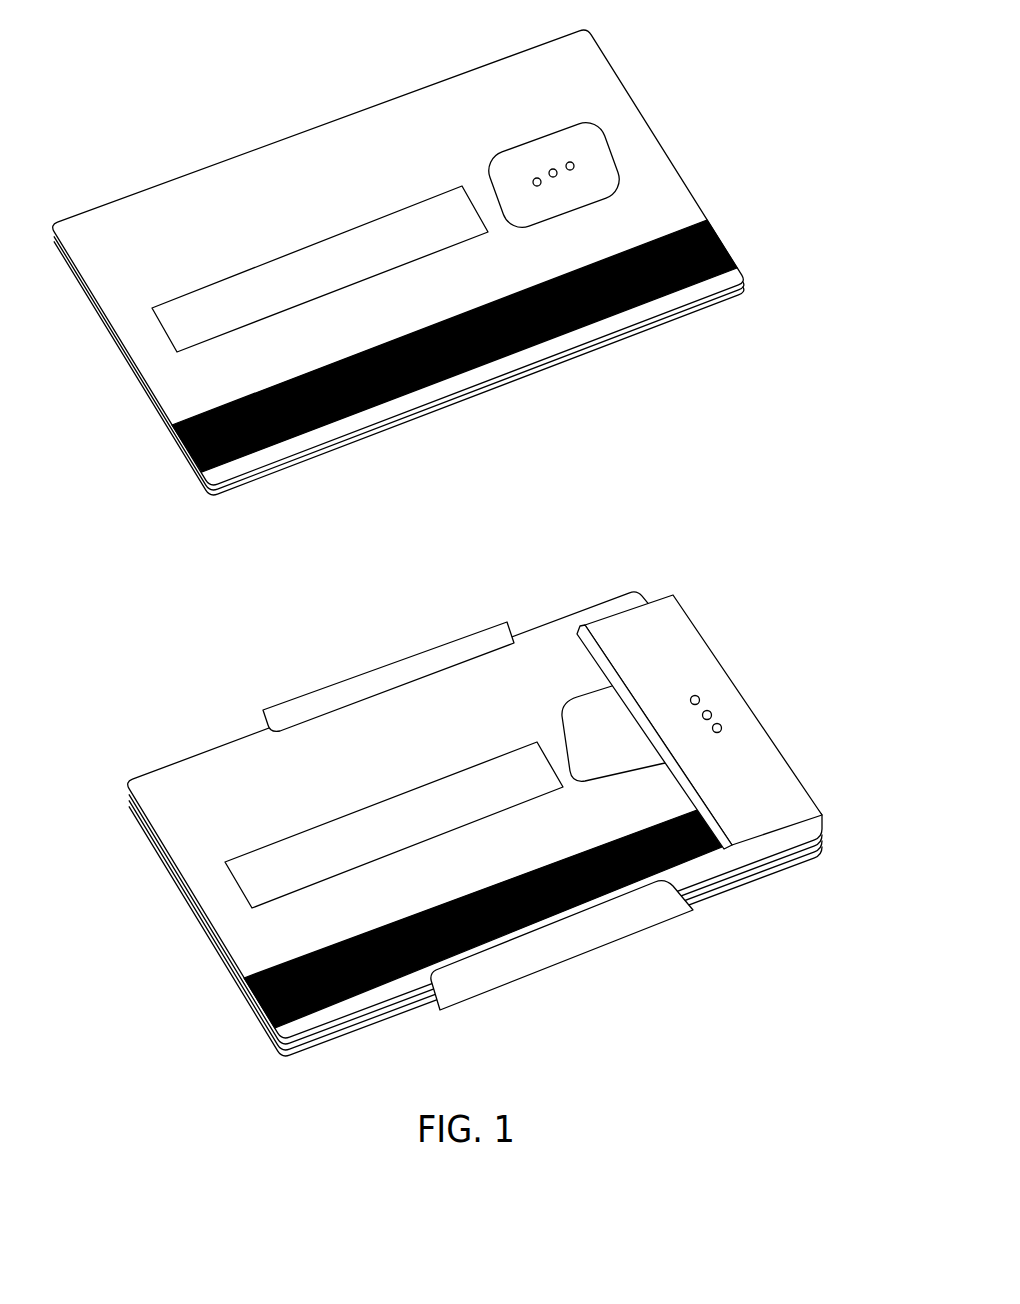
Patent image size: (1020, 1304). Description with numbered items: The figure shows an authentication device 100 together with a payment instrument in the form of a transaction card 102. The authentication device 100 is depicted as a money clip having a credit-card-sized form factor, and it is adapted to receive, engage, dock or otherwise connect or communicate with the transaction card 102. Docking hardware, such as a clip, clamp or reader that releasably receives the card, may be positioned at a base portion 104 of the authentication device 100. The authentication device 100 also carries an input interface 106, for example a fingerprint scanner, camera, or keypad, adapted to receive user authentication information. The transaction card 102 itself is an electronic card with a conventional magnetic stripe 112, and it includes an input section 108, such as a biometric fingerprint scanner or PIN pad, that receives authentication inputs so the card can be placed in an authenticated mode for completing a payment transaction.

The authentication device 100 is at (146, 646).
The transaction card 102 is at (220, 137).
The base portion 104 is at (637, 680).
The input interface 106 is at (711, 708).
The input section 108 is at (580, 157).
The magnetic stripe 112 is at (727, 242).